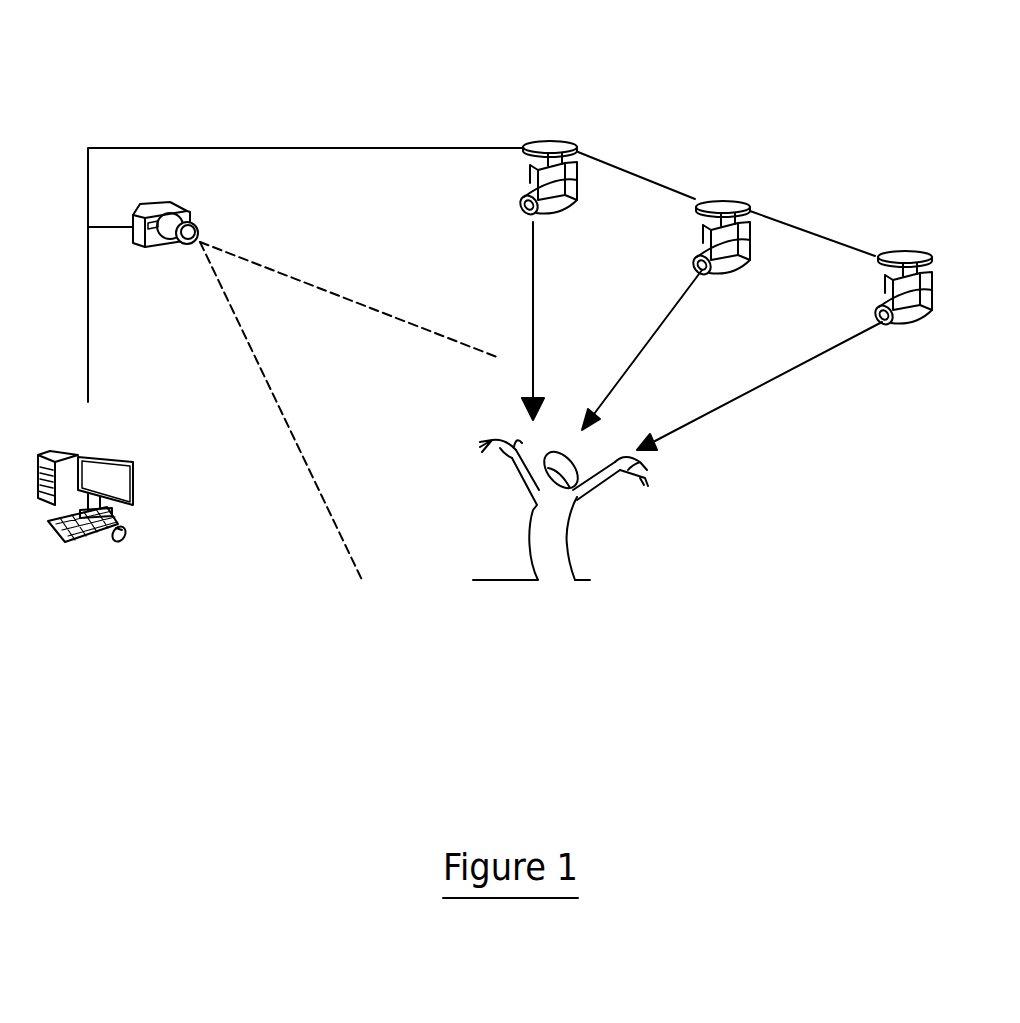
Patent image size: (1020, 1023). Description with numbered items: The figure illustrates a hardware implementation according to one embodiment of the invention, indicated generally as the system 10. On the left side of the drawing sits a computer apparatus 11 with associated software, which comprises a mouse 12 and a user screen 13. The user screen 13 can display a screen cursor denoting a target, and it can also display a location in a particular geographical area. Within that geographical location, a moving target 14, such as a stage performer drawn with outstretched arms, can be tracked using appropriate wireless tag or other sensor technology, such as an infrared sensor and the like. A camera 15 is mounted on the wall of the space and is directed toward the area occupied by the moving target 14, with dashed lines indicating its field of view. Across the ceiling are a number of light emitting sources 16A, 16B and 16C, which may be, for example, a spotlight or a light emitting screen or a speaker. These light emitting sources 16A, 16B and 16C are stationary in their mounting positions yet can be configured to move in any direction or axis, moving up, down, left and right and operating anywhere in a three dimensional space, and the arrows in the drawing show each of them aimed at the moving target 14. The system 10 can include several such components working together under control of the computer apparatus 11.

The hardware implementation 10 is at (243, 107).
The computer apparatus 11 is at (65, 455).
The mouse 12 is at (125, 537).
The user screen 13 is at (112, 478).
The moving target 14 is at (590, 515).
The camera 15 is at (157, 243).
The light emitting source 16A is at (538, 187).
The light emitting source 16B is at (707, 248).
The light emitting source 16C is at (890, 303).